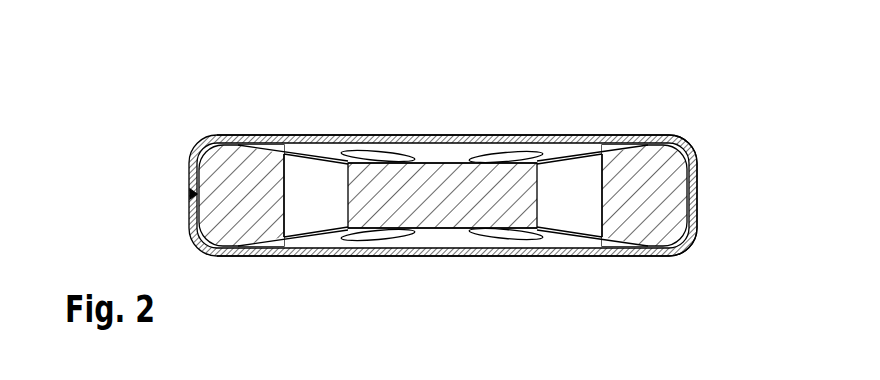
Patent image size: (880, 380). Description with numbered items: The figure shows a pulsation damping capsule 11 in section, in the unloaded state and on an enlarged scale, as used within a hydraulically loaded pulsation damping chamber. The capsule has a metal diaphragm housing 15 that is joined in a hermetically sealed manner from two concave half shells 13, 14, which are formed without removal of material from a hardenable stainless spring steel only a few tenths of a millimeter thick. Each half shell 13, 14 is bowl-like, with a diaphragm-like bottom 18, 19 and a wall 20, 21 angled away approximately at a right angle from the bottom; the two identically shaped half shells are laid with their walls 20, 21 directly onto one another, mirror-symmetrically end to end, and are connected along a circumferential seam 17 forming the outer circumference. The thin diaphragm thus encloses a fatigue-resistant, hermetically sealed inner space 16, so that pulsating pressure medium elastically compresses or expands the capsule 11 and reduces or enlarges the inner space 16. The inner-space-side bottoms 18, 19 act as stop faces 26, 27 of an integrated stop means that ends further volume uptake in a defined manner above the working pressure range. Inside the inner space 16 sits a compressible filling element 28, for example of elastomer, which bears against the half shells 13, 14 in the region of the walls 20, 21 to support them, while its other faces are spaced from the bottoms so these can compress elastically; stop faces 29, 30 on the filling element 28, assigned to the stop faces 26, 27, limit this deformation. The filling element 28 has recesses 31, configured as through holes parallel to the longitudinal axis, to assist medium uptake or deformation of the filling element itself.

The pulsation damping capsule 11 is at (662, 100).
The half shell 13 is at (295, 136).
The half shell 14 is at (295, 257).
The metal diaphragm housing 15 is at (226, 120).
The inner space 16 is at (425, 150).
The circumferential seam 17 is at (697, 196).
The diaphragm-like bottom 18 is at (382, 140).
The diaphragm-like bottom 19 is at (380, 257).
The wall 20 is at (697, 168).
The wall 21 is at (697, 222).
The stop face 26 is at (490, 148).
The stop face 27 is at (488, 242).
The filling element 28 is at (650, 215).
The stop face 29 is at (455, 153).
The stop face 30 is at (456, 258).
The recess 31 is at (573, 215).